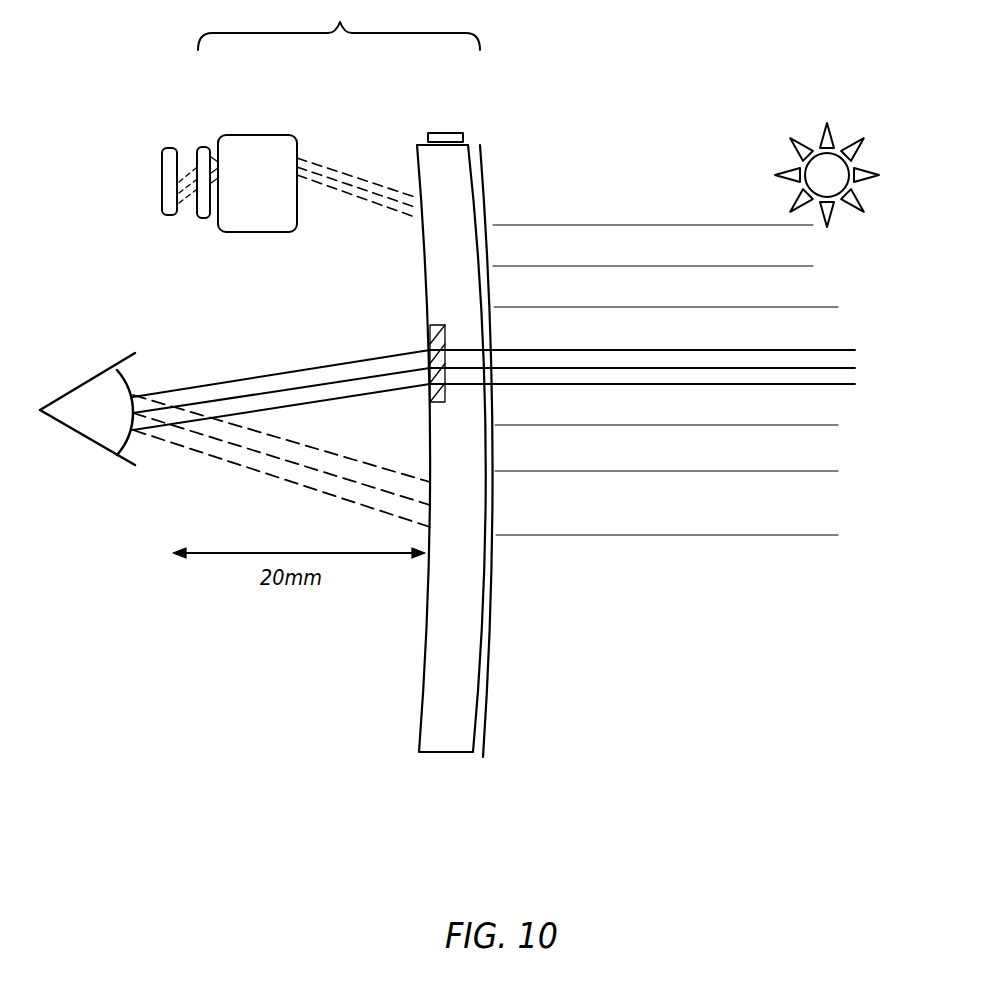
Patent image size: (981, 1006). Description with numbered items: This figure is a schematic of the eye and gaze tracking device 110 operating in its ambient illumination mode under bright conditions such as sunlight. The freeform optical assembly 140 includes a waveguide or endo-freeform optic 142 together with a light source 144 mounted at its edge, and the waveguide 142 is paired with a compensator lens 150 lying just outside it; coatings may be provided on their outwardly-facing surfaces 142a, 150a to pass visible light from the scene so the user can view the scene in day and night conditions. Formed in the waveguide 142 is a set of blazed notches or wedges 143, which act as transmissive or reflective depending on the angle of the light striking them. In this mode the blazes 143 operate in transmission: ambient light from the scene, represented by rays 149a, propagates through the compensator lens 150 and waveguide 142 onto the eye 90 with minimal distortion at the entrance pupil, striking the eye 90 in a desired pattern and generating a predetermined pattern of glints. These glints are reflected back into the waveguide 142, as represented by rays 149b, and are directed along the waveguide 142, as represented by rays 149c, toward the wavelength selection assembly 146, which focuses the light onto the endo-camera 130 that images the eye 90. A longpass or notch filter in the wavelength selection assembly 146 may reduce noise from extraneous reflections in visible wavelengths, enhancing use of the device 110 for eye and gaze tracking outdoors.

The eye and/or gaze tracking device 110 is at (562, 137).
The endo-camera 130 is at (170, 147).
The freeform optical assembly 140 is at (339, 25).
The waveguide 142 is at (466, 473).
The outwardly-facing surface of the waveguide 142a is at (480, 607).
The blazed notches or wedges 143 is at (403, 339).
The light source 144 is at (455, 131).
The wavelength selection assembly 146 is at (204, 219).
The rays of ambient light 149a is at (648, 386).
The rays of reflected glint light 149b is at (263, 477).
The rays of reflected glint light 149c is at (347, 166).
The compensator lens 150 is at (530, 451).
The outwardly-facing surface of the compensator lens 150a is at (489, 695).
The eye 90 is at (95, 443).